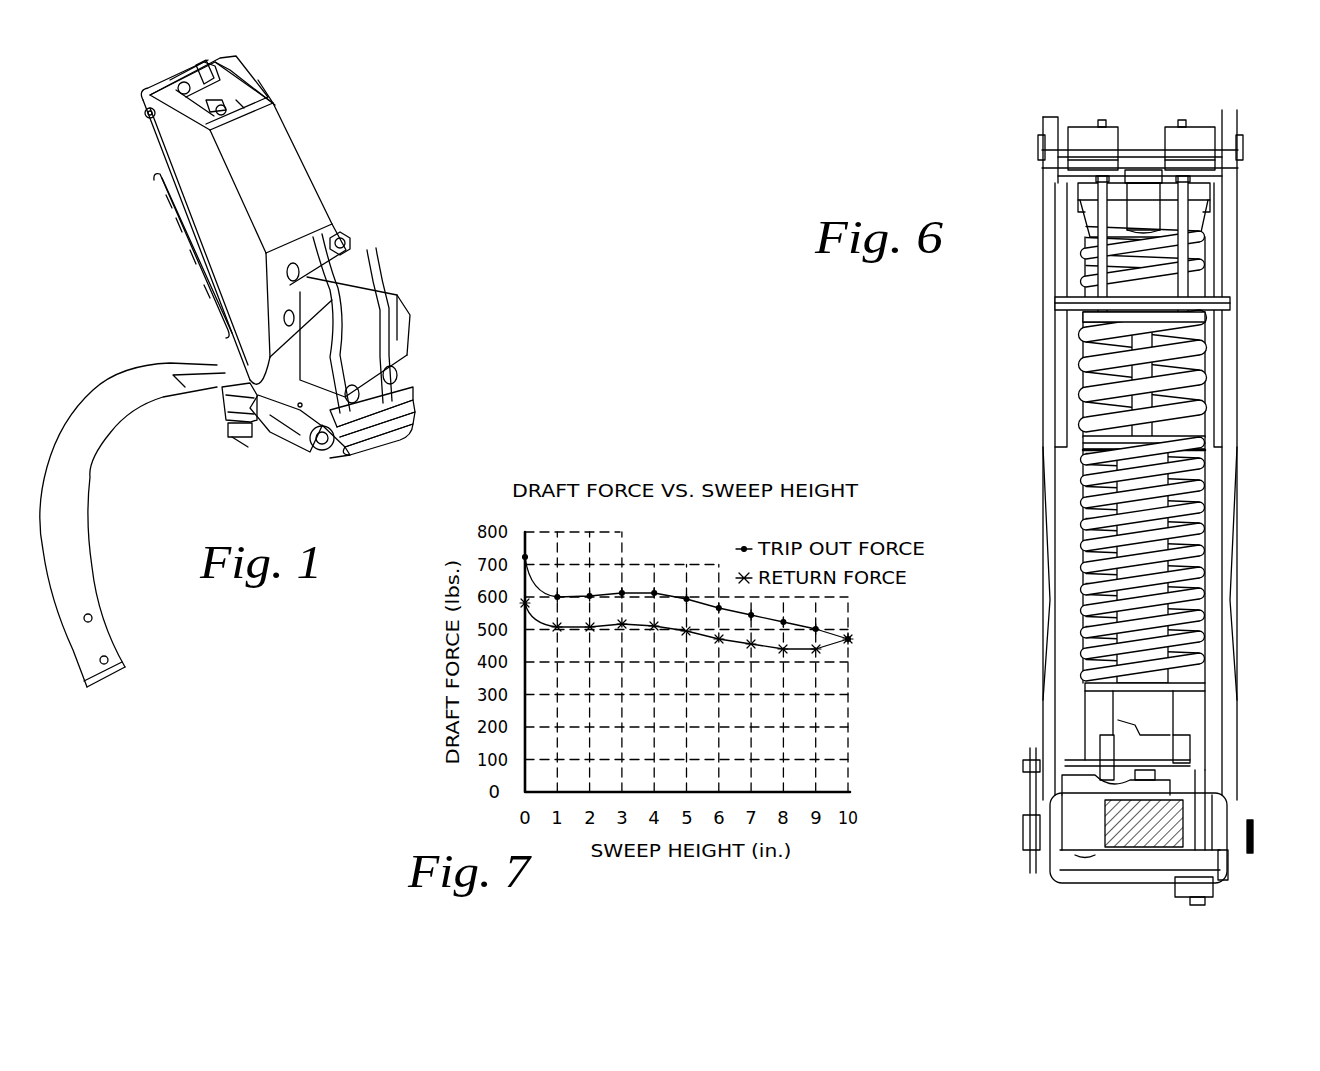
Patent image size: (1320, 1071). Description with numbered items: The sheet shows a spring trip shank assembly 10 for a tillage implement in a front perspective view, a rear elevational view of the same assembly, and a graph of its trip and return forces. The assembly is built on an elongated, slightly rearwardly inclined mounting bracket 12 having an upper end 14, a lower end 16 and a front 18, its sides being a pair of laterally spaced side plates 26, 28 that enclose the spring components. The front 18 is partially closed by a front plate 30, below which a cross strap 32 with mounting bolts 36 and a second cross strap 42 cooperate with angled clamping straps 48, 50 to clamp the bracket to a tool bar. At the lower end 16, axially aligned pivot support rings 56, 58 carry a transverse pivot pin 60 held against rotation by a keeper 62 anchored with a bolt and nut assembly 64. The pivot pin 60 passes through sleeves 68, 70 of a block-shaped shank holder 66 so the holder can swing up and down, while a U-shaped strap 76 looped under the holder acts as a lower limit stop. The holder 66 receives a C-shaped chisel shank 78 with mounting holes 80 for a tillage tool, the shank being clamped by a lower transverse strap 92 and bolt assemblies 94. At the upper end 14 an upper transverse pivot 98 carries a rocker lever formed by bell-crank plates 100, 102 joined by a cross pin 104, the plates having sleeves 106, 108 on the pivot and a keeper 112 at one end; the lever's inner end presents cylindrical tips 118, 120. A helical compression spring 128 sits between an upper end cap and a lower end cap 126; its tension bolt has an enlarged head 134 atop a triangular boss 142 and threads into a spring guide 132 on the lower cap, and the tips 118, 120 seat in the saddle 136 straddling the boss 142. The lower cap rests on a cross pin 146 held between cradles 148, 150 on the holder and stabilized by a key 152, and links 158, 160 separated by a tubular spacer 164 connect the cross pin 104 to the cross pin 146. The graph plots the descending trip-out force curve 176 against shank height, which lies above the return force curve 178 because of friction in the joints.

In FIG. 1, the shank assembly 10 is at (257, 352).
In FIG. 1, the mounting bracket 12 is at (150, 149).
In FIG. 1, the upper end 14 is at (190, 63).
In FIG. 1, the lower end 16 is at (303, 458).
In FIG. 1, the front 18 is at (280, 189).
In FIG. 1, the side plate 26 is at (218, 262).
In FIG. 6, the side plate 26 is at (1233, 487).
In FIG. 1, the side plate 28 is at (250, 98).
In FIG. 6, the side plate 28 is at (1046, 468).
In FIG. 1, the front plate 30 is at (282, 122).
In FIG. 1, the cross strap 32 is at (318, 228).
In FIG. 1, the mounting bolts 36 is at (353, 244).
In FIG. 1, the second cross strap 42 is at (413, 400).
In FIG. 1, the angled clamping strap 48 is at (367, 402).
In FIG. 1, the angled clamping strap 50 is at (398, 328).
In FIG. 1, the pivot support ring 56 is at (316, 450).
In FIG. 1, the pivot support ring 58 is at (415, 417).
In FIG. 6, the pivot pin 60 is at (1251, 828).
In FIG. 6, the keeper 62 is at (1030, 870).
In FIG. 6, the bolt and nut assembly 64 is at (1036, 760).
In FIG. 1, the shank holder 66 is at (218, 404).
In FIG. 6, the shank holder 66 is at (1078, 830).
In FIG. 1, the sleeve 68 is at (355, 445).
In FIG. 1, the sleeve 70 is at (398, 425).
In FIG. 6, the U-shaped strap 76 is at (1086, 886).
In FIG. 1, the chisel shank 78 is at (76, 475).
In FIG. 6, the chisel shank 78 is at (1152, 840).
In FIG. 1, the mounting holes 80 is at (91, 615).
In FIG. 1, the lower transverse strap 92 is at (238, 442).
In FIG. 6, the lower transverse strap 92 is at (1222, 864).
In FIG. 6, the bolt assemblies 94 is at (1200, 900).
In FIG. 1, the upper transverse pivot 98 is at (144, 111).
In FIG. 6, the upper transverse pivot 98 is at (1240, 152).
In FIG. 6, the bell-crank shaped plate 100 is at (1180, 265).
In FIG. 6, the bell-crank shaped plate 102 is at (1103, 258).
In FIG. 1, the cross pin 104 is at (180, 86).
In FIG. 6, the cross pin 104 is at (1068, 300).
In FIG. 6, the sleeve 106 is at (1197, 130).
In FIG. 6, the sleeve 108 is at (1088, 130).
In FIG. 6, the keeper 112 is at (1050, 152).
In FIG. 6, the cylindrical tip 118 is at (1200, 196).
In FIG. 6, the cylindrical tip 120 is at (1085, 196).
In FIG. 6, the lower end cap 126 is at (1160, 704).
In FIG. 6, the helical compression spring 128 is at (1203, 356).
In FIG. 6, the spring guide 132 is at (1160, 536).
In FIG. 1, the enlarged head 134 is at (214, 105).
In FIG. 6, the enlarged head 134 is at (1132, 176).
In FIG. 6, the saddle 136 is at (1208, 226).
In FIG. 6, the boss 142 is at (1130, 200).
In FIG. 6, the cross pin 146 is at (1115, 740).
In FIG. 6, the cradle 148 is at (1182, 752).
In FIG. 6, the cradle 150 is at (1105, 767).
In FIG. 6, the stabilizer key 152 is at (1140, 787).
In FIG. 1, the link 158 is at (165, 212).
In FIG. 6, the link 158 is at (1220, 640).
In FIG. 6, the link 160 is at (1068, 640).
In FIG. 6, the tubular spacer 164 is at (1193, 440).
In FIG. 7, the trip-out force curve 176 is at (603, 592).
In FIG. 7, the return force curve 178 is at (670, 630).